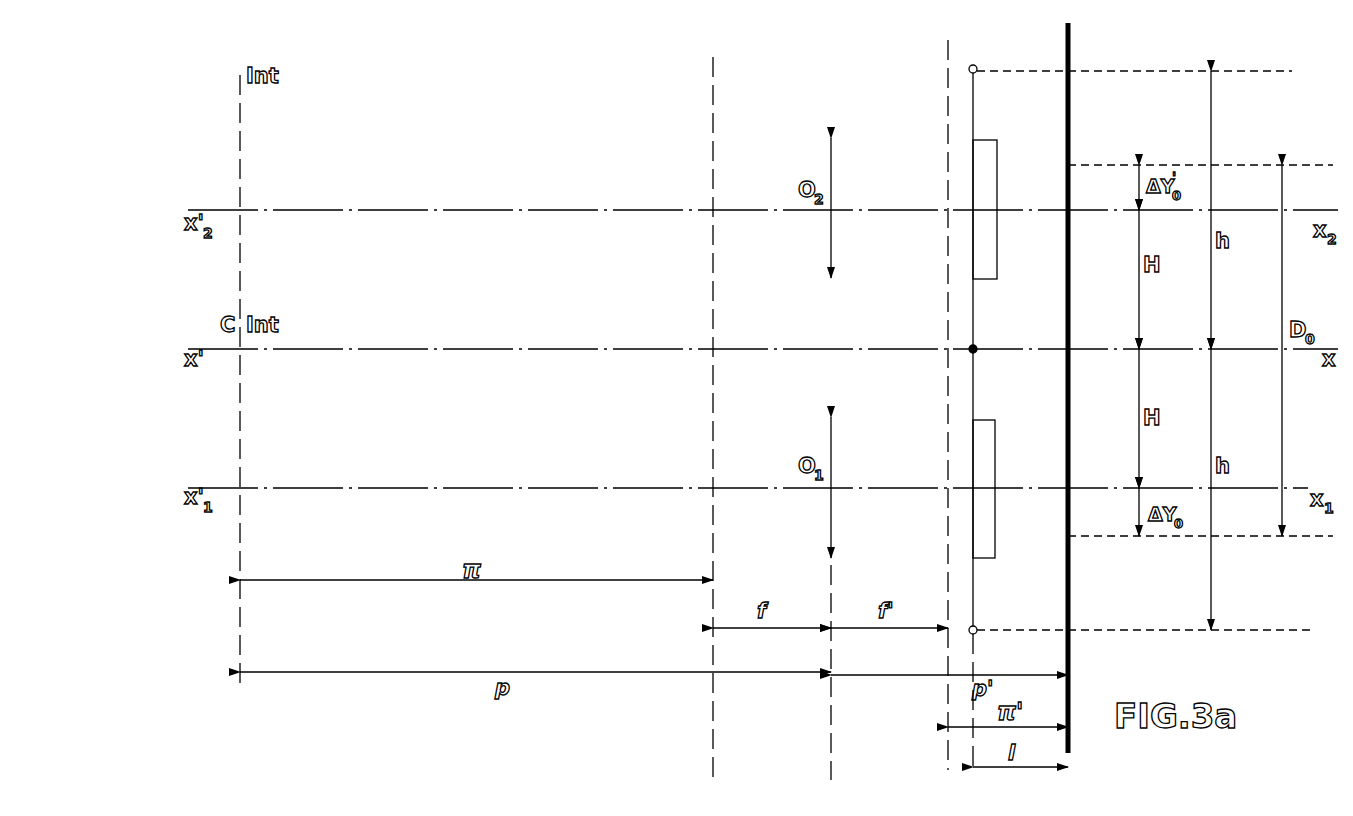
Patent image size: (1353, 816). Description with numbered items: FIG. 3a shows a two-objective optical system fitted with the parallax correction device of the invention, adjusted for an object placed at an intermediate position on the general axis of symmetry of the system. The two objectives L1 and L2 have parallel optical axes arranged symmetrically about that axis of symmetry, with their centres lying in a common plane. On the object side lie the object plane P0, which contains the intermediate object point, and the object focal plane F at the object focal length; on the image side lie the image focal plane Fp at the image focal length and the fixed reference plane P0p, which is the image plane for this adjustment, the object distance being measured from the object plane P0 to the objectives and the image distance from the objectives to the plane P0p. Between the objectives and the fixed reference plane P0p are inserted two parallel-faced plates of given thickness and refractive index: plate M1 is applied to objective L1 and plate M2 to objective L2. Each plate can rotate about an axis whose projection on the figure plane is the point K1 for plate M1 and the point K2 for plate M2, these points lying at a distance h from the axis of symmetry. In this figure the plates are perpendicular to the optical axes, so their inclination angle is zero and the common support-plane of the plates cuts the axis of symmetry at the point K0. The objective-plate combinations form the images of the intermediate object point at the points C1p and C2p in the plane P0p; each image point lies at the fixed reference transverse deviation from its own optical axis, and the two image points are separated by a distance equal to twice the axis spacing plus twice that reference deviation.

The object plane P0 is at (228, 373).
The object focal plane F is at (704, 408).
The image focal plane Fp is at (961, 399).
The fixed reference plane P0p is at (1084, 379).
The first objective L1 is at (814, 504).
The second objective L2 is at (834, 193).
The intersection point of plate support-plane K0 is at (985, 336).
The rotation axis point of plate M1 K1 is at (988, 635).
The rotation axis point of plate M2 K2 is at (988, 68).
The parallel-faced plate M1 is at (985, 545).
The parallel-faced plate M2 is at (982, 150).
The image point C1p is at (1200, 555).
The image point C2p is at (1200, 146).